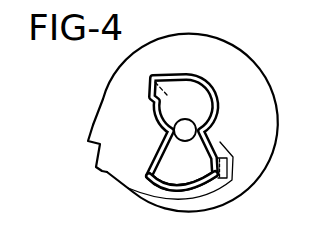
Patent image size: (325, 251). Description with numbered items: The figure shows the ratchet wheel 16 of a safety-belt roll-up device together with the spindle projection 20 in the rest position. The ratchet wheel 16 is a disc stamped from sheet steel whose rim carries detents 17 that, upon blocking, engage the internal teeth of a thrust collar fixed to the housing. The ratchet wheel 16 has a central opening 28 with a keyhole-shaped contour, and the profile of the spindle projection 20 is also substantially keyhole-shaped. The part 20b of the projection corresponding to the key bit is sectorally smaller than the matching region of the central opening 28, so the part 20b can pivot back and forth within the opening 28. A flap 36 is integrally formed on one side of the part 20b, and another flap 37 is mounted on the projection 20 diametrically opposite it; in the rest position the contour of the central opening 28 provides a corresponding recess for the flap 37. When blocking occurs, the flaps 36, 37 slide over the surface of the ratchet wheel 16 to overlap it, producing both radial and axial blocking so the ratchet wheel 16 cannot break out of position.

The ratchet wheel 16 is at (249, 74).
The detents 17 is at (97, 167).
The spindle projection 20 is at (203, 90).
The key bit part 20b is at (174, 178).
The central opening 28 is at (220, 142).
The flap 36 is at (227, 165).
The flap 37 is at (147, 91).